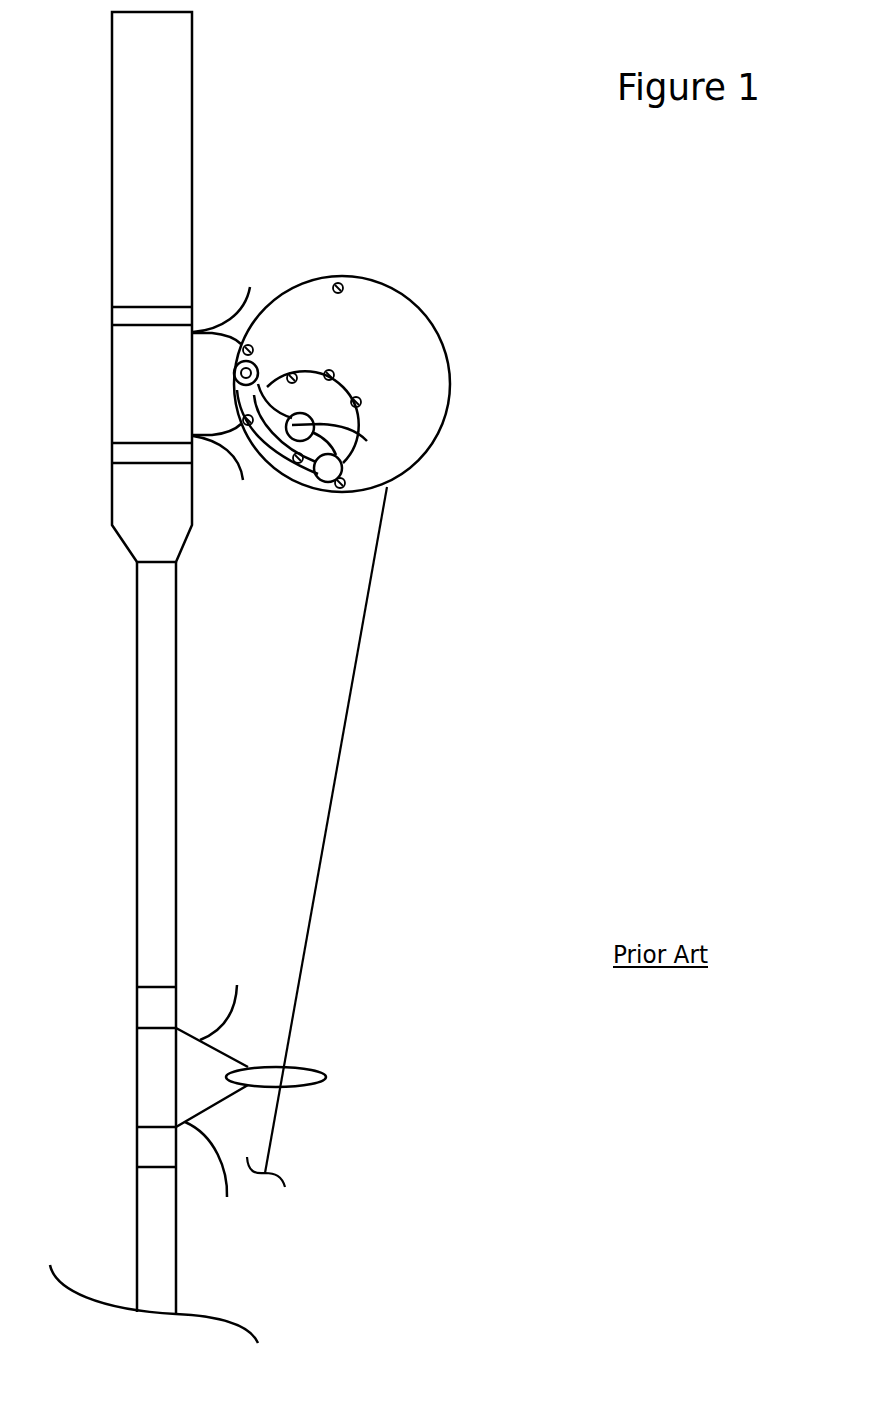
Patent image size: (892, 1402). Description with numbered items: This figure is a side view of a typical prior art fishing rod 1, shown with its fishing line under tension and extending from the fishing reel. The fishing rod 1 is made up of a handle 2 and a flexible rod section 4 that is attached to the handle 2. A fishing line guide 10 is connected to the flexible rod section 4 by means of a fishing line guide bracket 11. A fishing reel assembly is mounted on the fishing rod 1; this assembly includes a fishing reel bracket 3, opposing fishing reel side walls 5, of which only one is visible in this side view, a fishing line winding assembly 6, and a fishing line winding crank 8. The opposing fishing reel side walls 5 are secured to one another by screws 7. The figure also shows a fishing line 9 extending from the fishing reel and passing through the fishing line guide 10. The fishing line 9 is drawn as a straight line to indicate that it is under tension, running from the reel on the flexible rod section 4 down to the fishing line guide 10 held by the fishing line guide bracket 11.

The fishing rod 1 is at (375, 145).
The handle 2 is at (172, 108).
The fishing reel bracket 3 is at (182, 313).
The flexible rod section 4 is at (153, 633).
The fishing reel side walls 5 is at (432, 413).
The fishing line winding assembly 6 is at (342, 383).
The screws 7 is at (338, 295).
The fishing line winding crank 8 is at (363, 440).
The fishing line 9 is at (353, 690).
The fishing line guide 10 is at (305, 1077).
The fishing line guide bracket 11 is at (167, 1008).